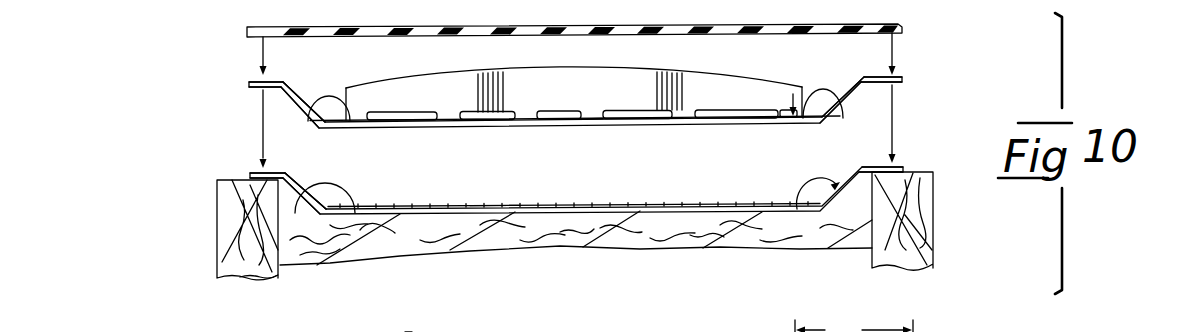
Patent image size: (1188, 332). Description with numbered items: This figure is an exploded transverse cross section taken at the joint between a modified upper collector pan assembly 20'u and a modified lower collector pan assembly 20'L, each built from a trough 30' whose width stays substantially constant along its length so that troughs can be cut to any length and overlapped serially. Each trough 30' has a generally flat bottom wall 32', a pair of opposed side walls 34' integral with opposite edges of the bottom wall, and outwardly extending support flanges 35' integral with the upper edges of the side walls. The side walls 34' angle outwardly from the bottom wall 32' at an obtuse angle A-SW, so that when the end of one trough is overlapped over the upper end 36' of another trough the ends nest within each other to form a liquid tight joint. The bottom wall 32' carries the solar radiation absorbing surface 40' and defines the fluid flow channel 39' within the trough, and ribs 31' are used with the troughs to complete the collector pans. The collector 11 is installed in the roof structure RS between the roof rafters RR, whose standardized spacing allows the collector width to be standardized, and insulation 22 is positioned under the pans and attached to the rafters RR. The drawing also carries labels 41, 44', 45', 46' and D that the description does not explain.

The upper collector pan assembly 20'u is at (560, 102).
The lower collector pan assembly 20'L is at (576, 177).
The support flange 35' is at (583, 111).
The side wall 34' is at (585, 157).
The fluid flow channel 39' is at (374, 128).
The obtuse angle A-SW is at (351, 115).
The rib 31' is at (574, 62).
The encapsulant layer 41 is at (470, 80).
The bottom wall 32' is at (575, 162).
The solar radiation absorbing surface 40' is at (499, 143).
The upper end 36' is at (491, 133).
The pad 45' is at (657, 134).
The pad 46' is at (631, 97).
The gap 44' is at (609, 139).
The trough 30' is at (486, 190).
The insulation 22 is at (344, 256).
The roof rafter RR is at (232, 231).
The roof structure RS is at (251, 288).
The solar collector 11 is at (405, 331).
The distance D is at (854, 324).